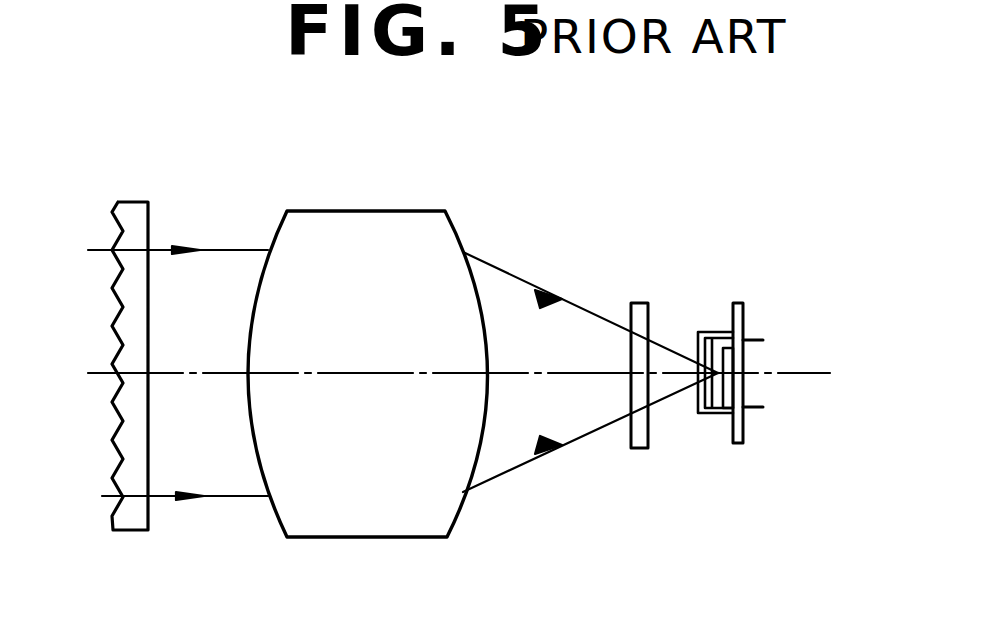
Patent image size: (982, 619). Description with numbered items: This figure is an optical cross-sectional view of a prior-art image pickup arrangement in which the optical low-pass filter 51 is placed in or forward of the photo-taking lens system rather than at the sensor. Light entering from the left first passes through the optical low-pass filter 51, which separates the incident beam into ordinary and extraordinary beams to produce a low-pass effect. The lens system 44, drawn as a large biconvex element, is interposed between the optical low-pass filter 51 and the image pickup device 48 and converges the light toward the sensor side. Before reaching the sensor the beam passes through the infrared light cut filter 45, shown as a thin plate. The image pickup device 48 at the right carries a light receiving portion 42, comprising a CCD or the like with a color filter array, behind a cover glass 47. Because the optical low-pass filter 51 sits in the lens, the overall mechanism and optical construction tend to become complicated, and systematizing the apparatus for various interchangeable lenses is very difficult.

The optical low-pass filter 51 is at (133, 200).
The lens system 44 is at (418, 210).
The infrared light cut filter 45 is at (640, 303).
The cover glass 47 is at (700, 416).
The light receiving portion 42 is at (730, 434).
The image pickup device 48 is at (740, 303).